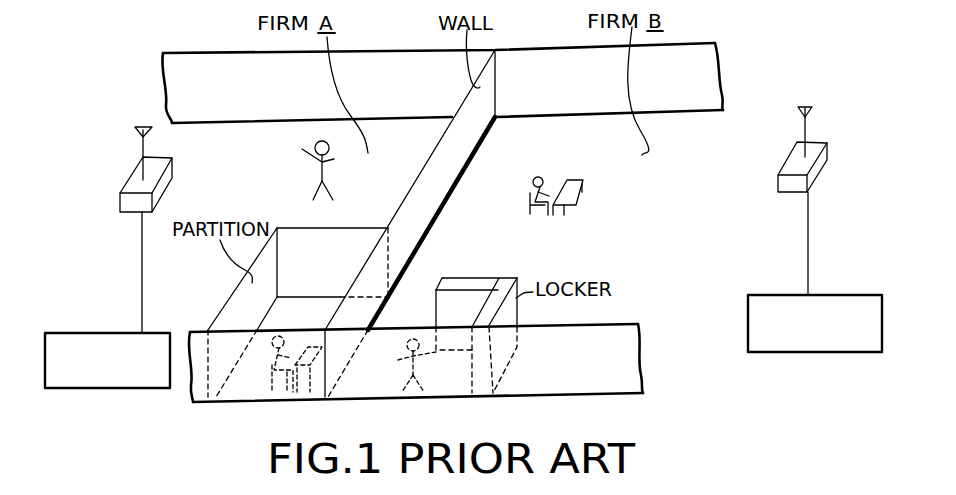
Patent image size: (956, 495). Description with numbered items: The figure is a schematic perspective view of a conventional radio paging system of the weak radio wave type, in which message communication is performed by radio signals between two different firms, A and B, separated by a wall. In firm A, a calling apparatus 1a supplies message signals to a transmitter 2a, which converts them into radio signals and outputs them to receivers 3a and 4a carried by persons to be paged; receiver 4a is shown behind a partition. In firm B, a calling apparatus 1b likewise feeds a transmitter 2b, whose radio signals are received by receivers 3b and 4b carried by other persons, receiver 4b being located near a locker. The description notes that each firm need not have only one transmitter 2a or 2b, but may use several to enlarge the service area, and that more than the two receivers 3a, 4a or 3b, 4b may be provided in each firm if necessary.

The calling apparatus 1a is at (113, 332).
The calling apparatus 1b is at (777, 293).
The transmitter 2a is at (132, 185).
The transmitter 2b is at (790, 167).
The receiver 3a is at (313, 149).
The receiver 3b is at (545, 173).
The receiver 4a is at (294, 330).
The receiver 4b is at (416, 330).